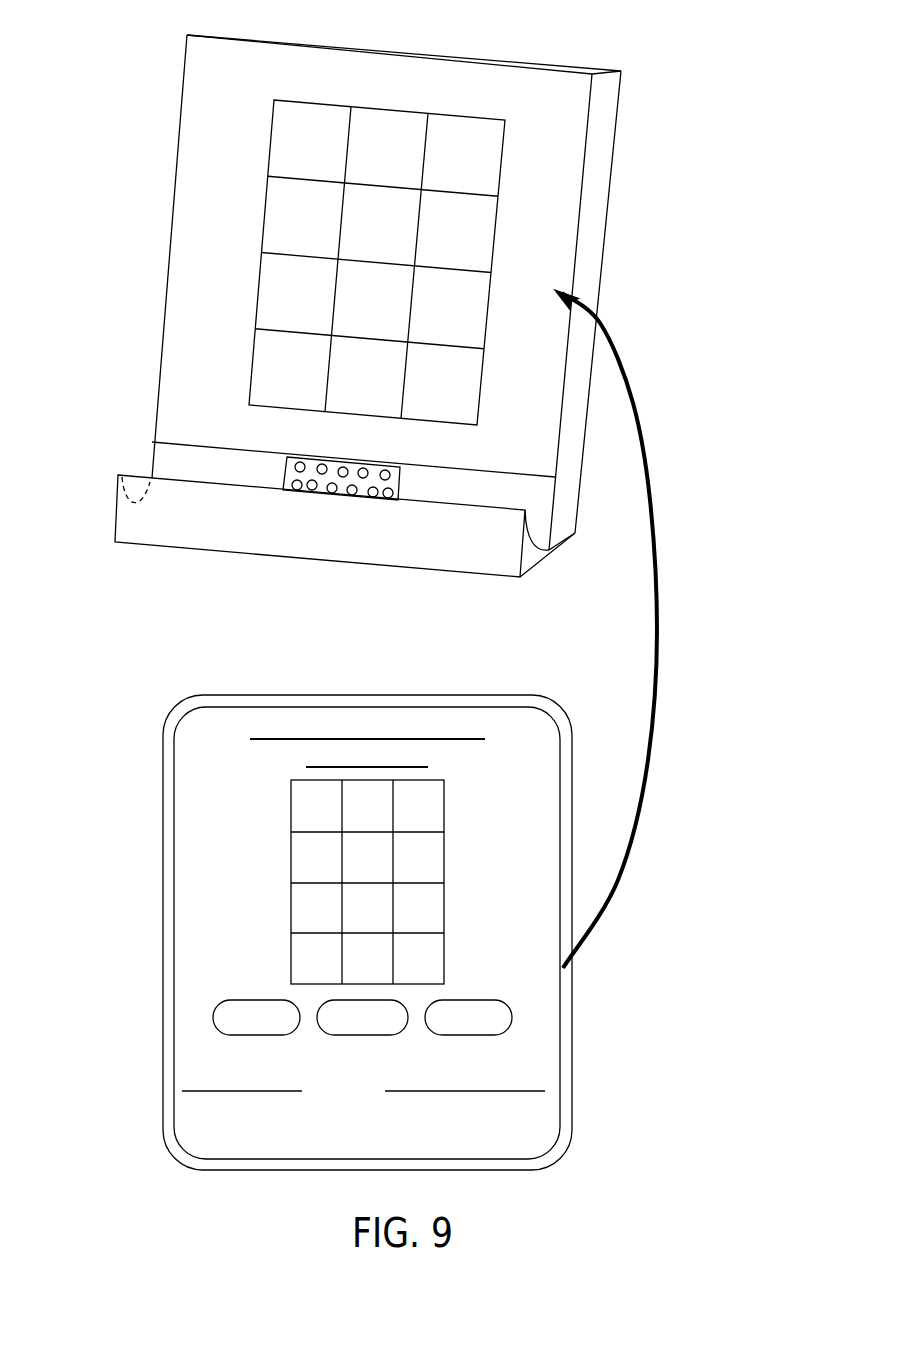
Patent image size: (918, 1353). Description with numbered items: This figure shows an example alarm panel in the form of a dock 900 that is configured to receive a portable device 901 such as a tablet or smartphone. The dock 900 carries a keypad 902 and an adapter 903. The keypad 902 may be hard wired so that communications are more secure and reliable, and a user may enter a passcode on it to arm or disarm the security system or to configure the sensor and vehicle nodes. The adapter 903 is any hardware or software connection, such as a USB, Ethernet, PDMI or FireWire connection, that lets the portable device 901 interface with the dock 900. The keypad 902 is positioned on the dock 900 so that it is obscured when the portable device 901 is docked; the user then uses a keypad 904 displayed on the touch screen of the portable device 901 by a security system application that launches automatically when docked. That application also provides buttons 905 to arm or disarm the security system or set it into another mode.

The dock 900 is at (177, 275).
The portable device 901 is at (167, 798).
The keypad 902 is at (450, 245).
The adapter 903 is at (400, 487).
The keypad 904 is at (423, 853).
The buttons 905 is at (468, 1000).